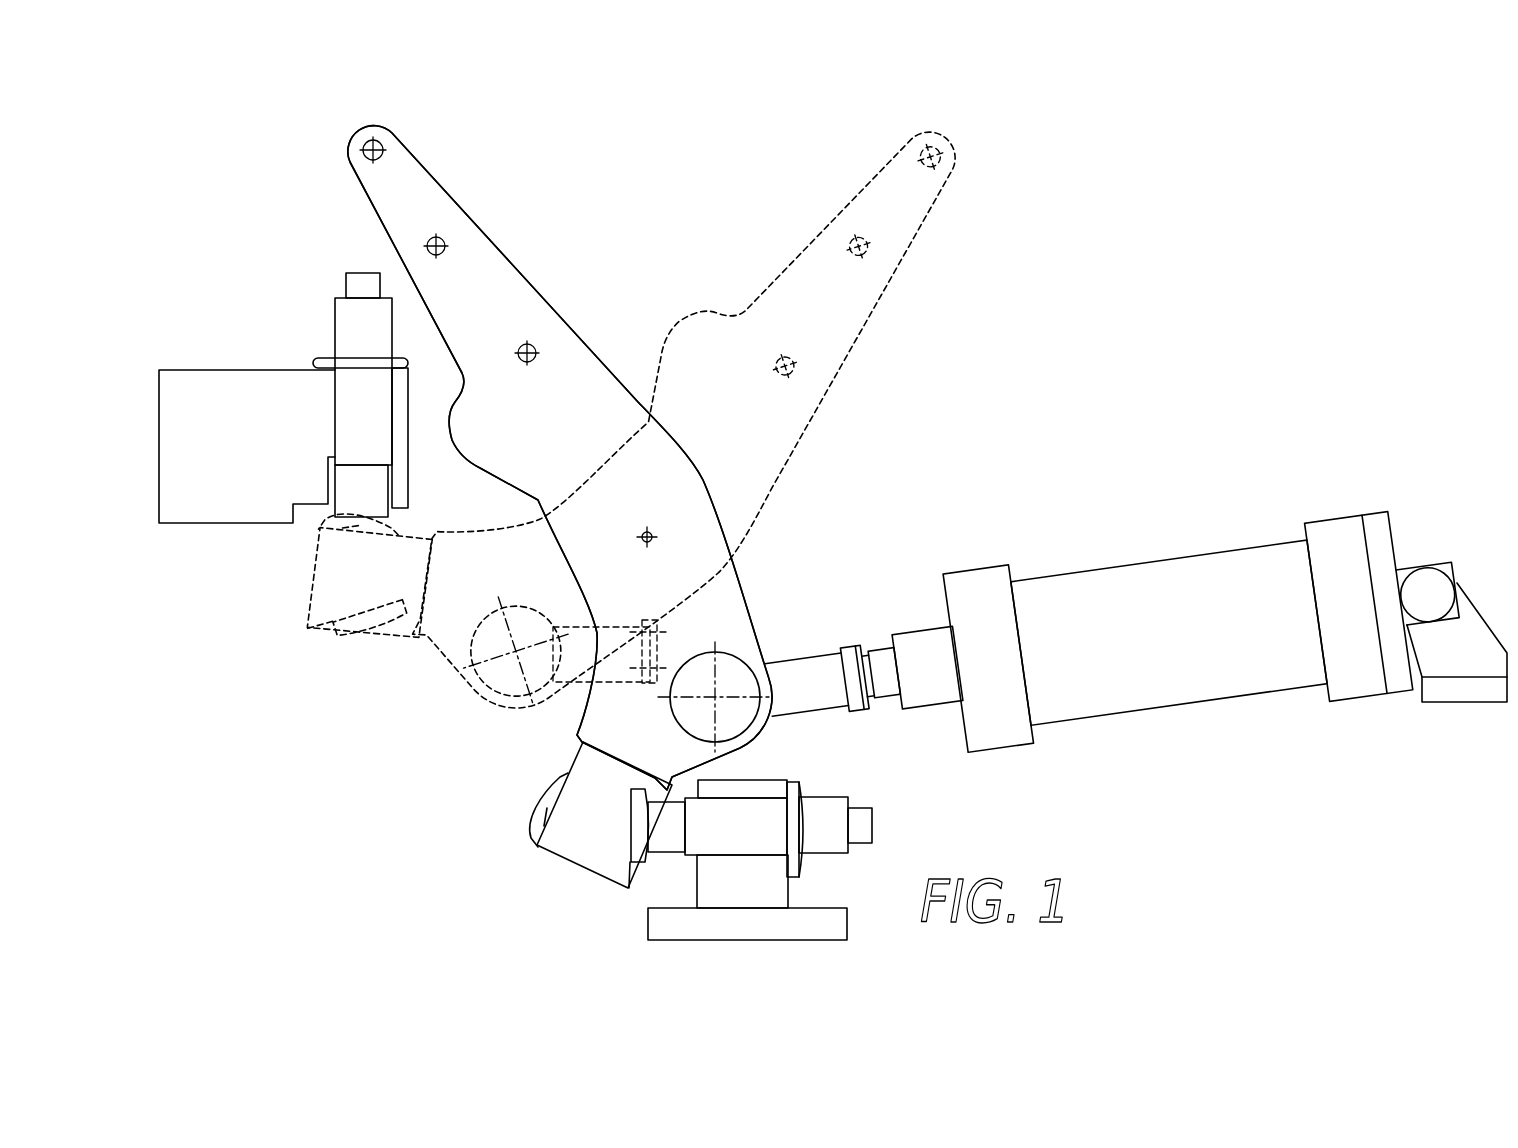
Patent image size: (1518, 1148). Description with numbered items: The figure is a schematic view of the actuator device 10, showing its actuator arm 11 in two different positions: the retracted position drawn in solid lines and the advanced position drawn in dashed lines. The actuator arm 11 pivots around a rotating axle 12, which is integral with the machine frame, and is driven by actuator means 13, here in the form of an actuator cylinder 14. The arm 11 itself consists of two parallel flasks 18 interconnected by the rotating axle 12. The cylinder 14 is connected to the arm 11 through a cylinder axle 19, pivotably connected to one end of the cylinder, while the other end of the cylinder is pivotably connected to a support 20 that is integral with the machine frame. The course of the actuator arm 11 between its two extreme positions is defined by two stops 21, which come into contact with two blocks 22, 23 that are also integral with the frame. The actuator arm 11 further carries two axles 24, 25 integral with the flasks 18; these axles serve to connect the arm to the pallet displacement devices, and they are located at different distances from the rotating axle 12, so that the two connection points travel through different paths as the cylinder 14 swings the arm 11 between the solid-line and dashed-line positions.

The actuator device 10 is at (1143, 317).
The actuator arm 11 is at (580, 322).
The rotating axle 12 is at (656, 535).
The actuator means 13 is at (1112, 604).
The actuator cylinder 14 is at (1207, 580).
The flasks 18 is at (598, 390).
The cylinder axle 19 is at (716, 696).
The support 20 is at (1460, 662).
The stops 21 is at (638, 823).
The block 22 is at (757, 812).
The block 23 is at (355, 420).
The axle 24 is at (384, 152).
The axle 25 is at (446, 247).